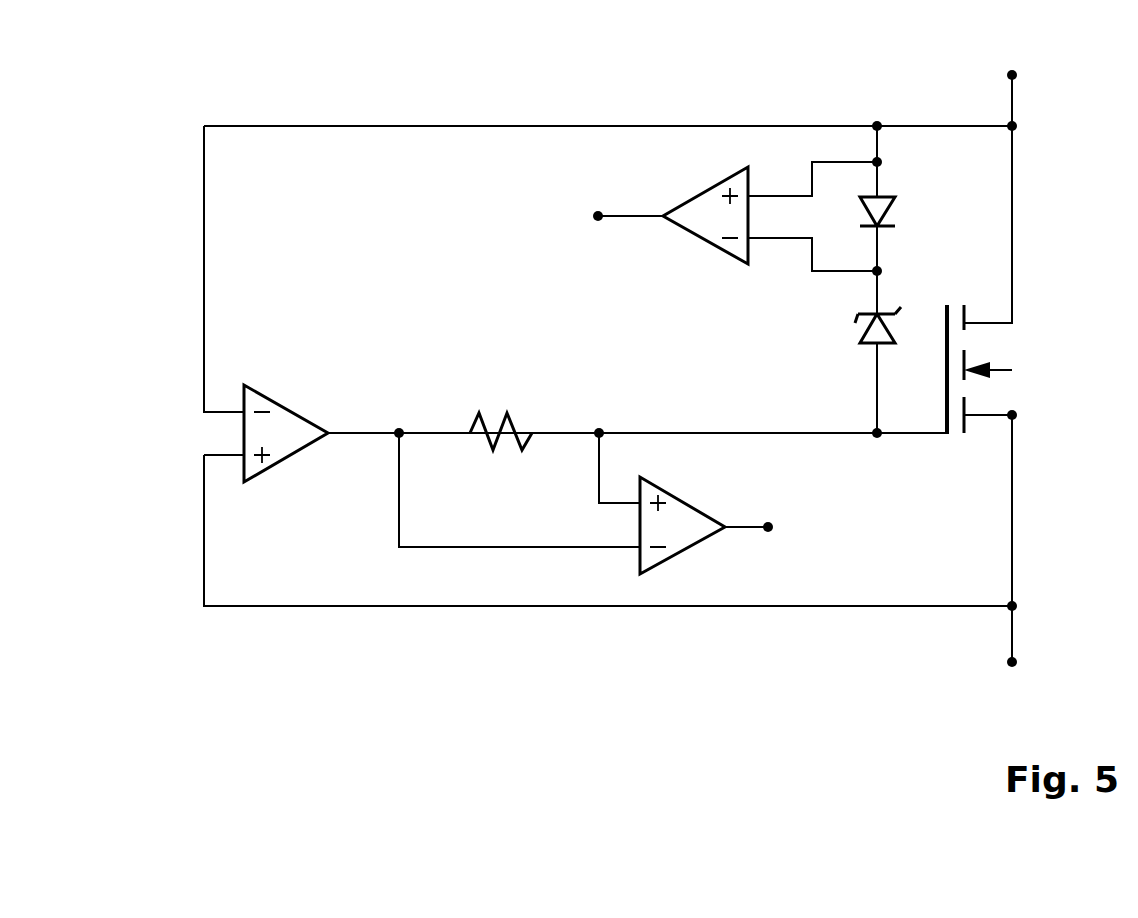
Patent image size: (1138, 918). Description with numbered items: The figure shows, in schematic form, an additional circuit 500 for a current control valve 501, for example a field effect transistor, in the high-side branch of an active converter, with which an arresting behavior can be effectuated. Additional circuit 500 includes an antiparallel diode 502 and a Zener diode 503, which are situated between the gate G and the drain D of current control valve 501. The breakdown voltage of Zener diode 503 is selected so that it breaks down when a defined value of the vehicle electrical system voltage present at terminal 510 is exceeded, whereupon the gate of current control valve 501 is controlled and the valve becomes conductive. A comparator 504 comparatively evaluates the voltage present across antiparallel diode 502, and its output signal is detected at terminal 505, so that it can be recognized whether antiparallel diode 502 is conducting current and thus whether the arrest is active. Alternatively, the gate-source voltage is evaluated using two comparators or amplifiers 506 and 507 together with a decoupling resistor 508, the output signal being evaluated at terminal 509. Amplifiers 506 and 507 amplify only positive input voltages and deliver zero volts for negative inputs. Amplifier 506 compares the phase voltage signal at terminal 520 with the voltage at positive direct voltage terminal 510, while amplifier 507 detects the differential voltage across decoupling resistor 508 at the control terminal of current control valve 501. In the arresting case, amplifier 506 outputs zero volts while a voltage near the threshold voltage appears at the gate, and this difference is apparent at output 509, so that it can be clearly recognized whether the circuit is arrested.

The additional circuit 500 is at (720, 648).
The current control valve 501 is at (988, 306).
The antiparallel diode 502 is at (906, 211).
The Zener diode 503 is at (847, 336).
The comparator 504 is at (705, 243).
The terminal 505 is at (598, 220).
The amplifier 506 is at (302, 388).
The amplifier 507 is at (704, 490).
The decoupling resistor 508 is at (492, 400).
The terminal 509 is at (770, 531).
The terminal 510 is at (1016, 75).
The terminal 520 is at (1016, 662).